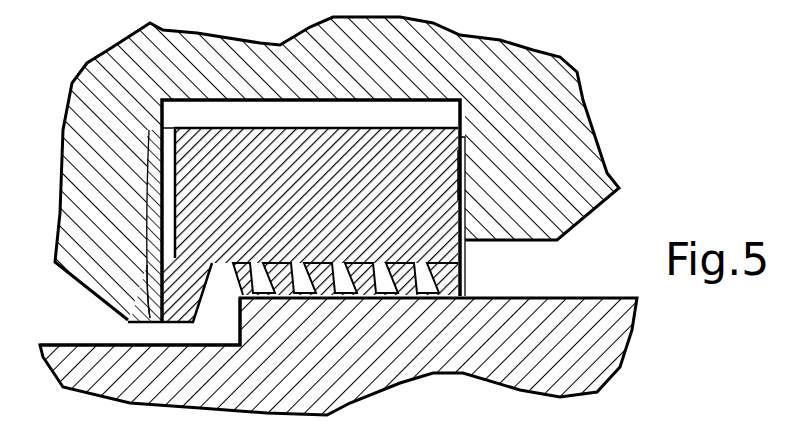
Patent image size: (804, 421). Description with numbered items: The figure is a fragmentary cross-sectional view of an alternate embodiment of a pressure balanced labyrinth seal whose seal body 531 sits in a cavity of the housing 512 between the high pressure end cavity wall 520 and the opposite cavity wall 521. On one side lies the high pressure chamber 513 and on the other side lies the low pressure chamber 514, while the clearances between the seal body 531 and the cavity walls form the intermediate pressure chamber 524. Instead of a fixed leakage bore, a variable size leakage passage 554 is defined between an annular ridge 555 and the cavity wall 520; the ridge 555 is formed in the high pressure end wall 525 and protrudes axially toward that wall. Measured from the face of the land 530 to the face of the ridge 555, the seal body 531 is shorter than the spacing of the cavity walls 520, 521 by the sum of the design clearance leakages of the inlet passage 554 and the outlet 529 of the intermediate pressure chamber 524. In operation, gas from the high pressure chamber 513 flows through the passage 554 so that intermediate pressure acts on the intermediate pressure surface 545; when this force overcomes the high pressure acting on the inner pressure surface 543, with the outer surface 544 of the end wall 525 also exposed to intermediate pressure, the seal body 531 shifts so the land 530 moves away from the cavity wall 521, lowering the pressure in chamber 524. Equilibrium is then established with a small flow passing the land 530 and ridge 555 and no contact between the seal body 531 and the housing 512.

The housing 512 is at (605, 173).
The high pressure chamber 513 is at (616, 281).
The low pressure chamber 514 is at (76, 334).
The high pressure end cavity wall 520 is at (455, 158).
The cavity wall 521 is at (165, 124).
The intermediate pressure chamber 524 is at (320, 127).
The high pressure end wall 525 is at (455, 268).
The outlet 529 is at (160, 326).
The land 530 is at (149, 320).
The seal body 531 is at (274, 191).
The inner pressure surface 543 is at (465, 247).
The outer surface 544 is at (465, 160).
The intermediate pressure surface 545 is at (147, 208).
The variable size leakage passage 554 is at (457, 193).
The annular ridge 555 is at (464, 203).